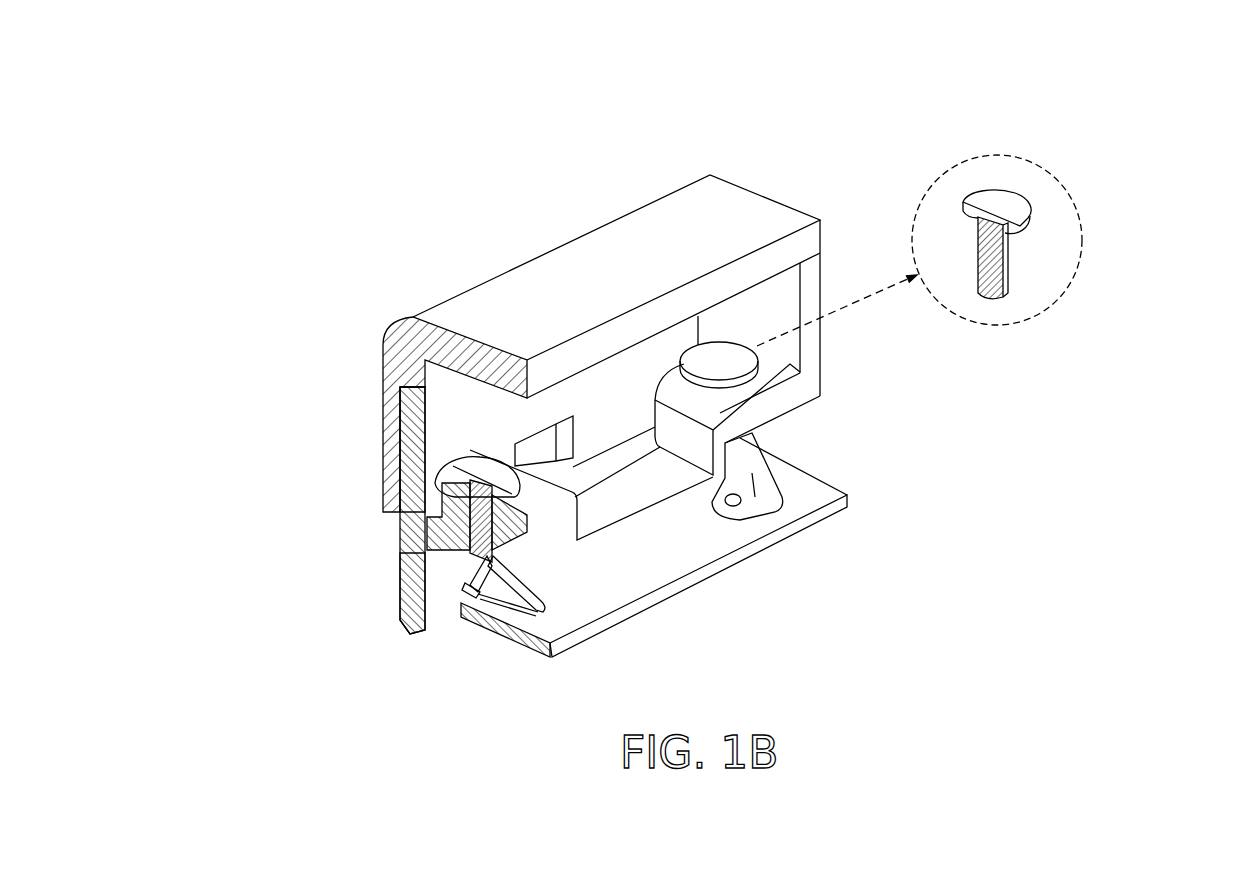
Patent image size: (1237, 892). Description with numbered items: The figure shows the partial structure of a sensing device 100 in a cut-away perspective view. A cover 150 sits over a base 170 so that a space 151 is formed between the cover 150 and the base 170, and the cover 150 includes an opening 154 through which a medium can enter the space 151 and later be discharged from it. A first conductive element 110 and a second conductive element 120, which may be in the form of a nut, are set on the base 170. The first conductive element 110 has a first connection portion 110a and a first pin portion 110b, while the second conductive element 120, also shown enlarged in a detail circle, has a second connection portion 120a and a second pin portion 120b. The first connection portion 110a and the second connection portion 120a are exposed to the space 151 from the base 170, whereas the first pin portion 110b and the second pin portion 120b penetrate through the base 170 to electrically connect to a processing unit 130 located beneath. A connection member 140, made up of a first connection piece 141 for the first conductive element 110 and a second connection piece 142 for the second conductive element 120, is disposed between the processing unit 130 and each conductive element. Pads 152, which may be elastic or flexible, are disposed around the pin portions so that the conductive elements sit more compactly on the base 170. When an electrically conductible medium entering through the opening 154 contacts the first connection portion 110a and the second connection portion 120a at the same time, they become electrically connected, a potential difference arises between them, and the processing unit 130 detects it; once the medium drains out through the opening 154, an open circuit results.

The sensing device 100 is at (272, 126).
The first conductive element 110 is at (314, 510).
The first connection portion 110a is at (400, 440).
The first pin portion 110b is at (346, 593).
The second conductive element 120 is at (820, 358).
The second connection portion 120a is at (1013, 213).
The second pin portion 120b is at (1060, 258).
The processing unit 130 is at (820, 490).
The connection member 140 is at (622, 564).
The first connection piece 141 is at (522, 568).
The second connection piece 142 is at (770, 522).
The cover 150 is at (562, 338).
The space 151 is at (442, 403).
The pad 152 is at (440, 523).
The opening 154 is at (531, 450).
The base 170 is at (780, 396).